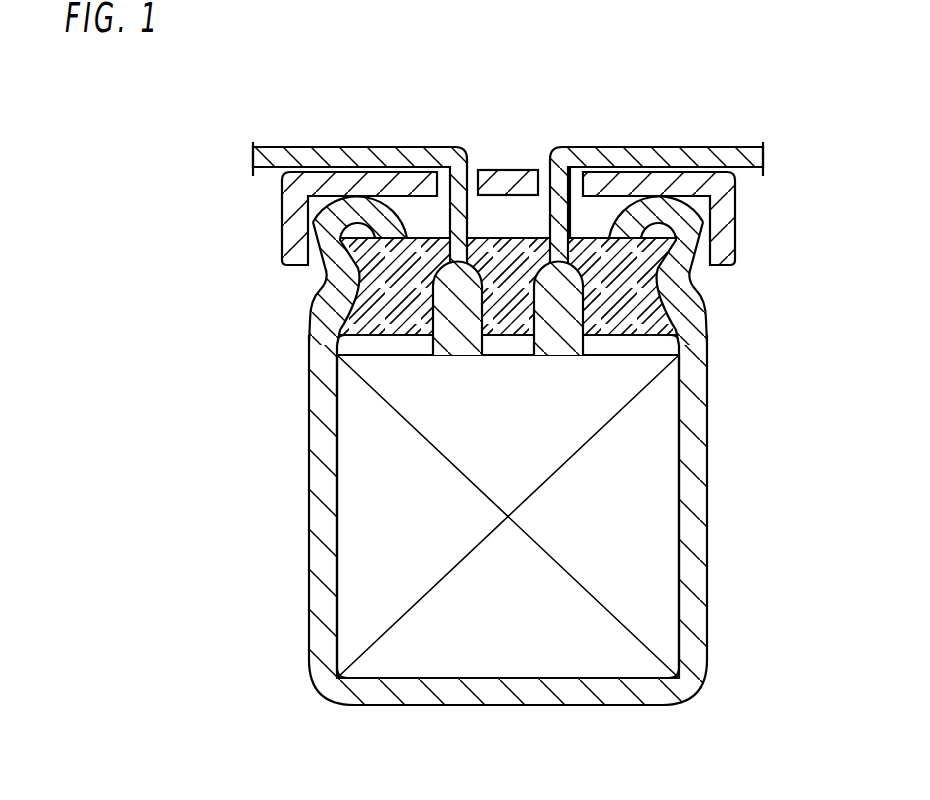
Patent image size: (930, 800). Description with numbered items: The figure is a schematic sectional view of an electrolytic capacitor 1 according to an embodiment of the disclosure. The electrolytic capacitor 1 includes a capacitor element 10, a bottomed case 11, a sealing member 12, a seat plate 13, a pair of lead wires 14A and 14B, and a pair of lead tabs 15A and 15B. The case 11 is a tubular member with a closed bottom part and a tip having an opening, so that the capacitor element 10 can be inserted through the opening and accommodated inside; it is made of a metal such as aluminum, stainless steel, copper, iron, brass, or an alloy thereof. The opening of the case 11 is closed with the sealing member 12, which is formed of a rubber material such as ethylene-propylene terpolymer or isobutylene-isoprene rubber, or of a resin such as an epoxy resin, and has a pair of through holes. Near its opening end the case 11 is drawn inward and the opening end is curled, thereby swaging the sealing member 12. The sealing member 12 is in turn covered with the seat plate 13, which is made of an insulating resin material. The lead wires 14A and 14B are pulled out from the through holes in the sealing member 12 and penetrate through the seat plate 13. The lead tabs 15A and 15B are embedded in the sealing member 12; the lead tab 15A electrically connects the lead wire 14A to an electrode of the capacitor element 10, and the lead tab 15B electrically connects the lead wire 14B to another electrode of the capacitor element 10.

The electrolytic capacitor 1 is at (745, 107).
The capacitor element 10 is at (657, 520).
The bottomed case 11 is at (695, 660).
The sealing member 12 is at (652, 290).
The seat plate 13 is at (725, 223).
The lead wire 14A is at (365, 147).
The lead wire 14B is at (668, 147).
The lead tab 15A is at (460, 343).
The lead tab 15B is at (553, 343).